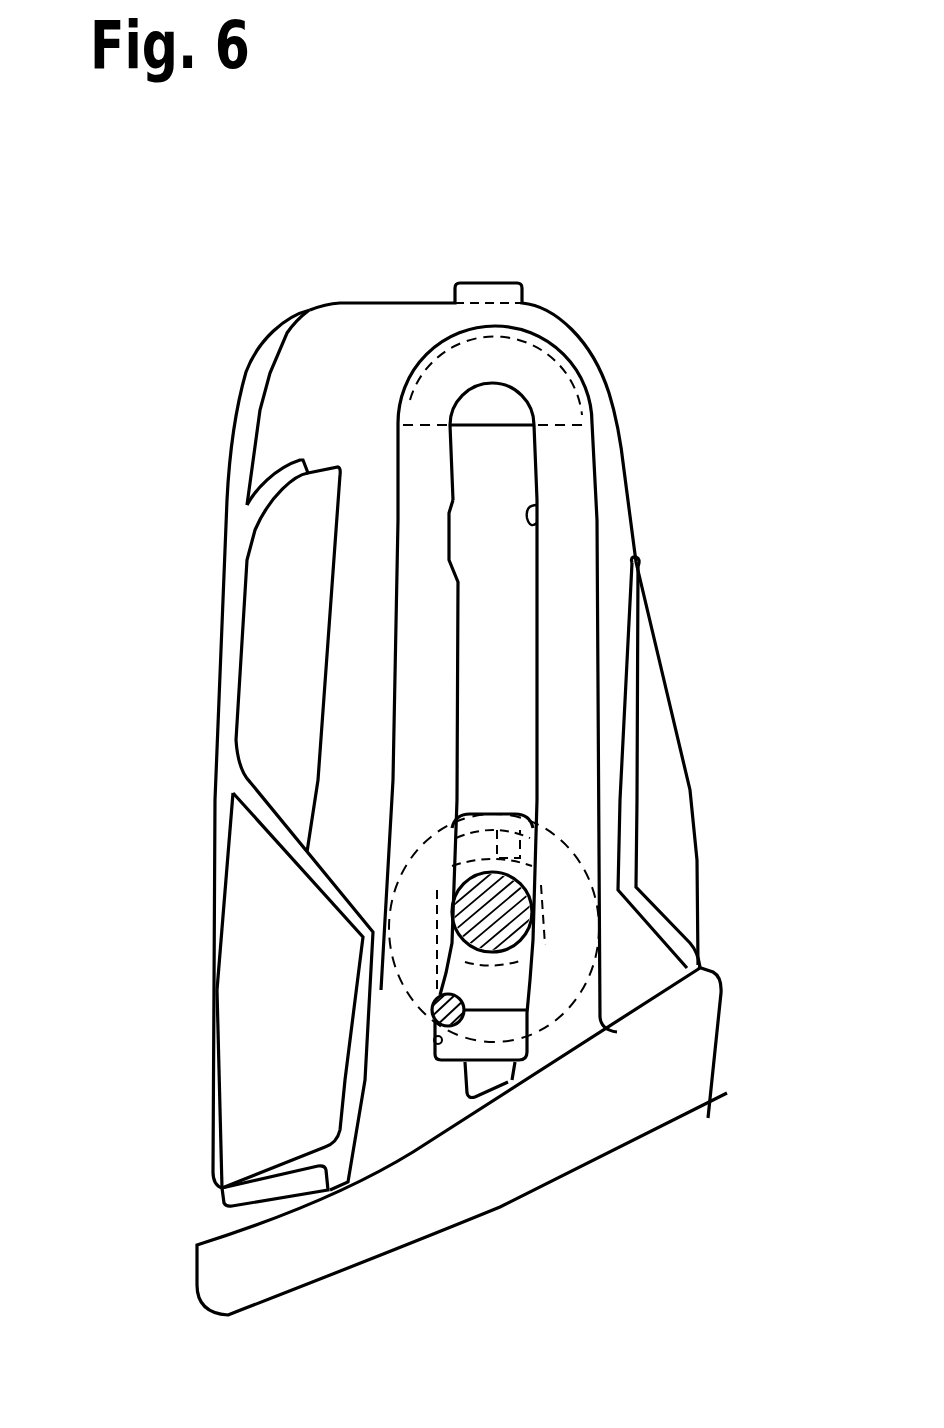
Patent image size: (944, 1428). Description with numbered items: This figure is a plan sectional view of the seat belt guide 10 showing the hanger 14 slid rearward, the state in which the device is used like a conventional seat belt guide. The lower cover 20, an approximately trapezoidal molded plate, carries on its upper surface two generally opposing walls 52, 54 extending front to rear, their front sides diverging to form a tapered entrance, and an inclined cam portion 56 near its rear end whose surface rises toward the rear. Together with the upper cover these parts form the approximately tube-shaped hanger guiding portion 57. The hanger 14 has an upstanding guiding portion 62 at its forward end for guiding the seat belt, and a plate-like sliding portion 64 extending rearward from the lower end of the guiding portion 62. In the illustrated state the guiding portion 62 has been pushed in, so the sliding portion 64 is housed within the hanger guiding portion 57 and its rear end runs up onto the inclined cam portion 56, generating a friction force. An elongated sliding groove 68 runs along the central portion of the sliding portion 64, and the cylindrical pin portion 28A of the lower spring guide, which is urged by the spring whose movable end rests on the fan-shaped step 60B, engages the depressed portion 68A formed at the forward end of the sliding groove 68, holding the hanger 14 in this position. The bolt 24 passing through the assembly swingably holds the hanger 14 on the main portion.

The seat belt guide 10 is at (114, 705).
The hanger 14 is at (496, 1222).
The lower cover 20 is at (368, 337).
The bolt 24 is at (535, 895).
The cylindrical pin portion 28A is at (432, 1001).
The wall 52 is at (360, 1010).
The wall 54 is at (632, 797).
The inclined cam portion 56 is at (512, 398).
The hanger guiding portion 57 is at (628, 958).
The step 60B is at (500, 1030).
The guiding portion 62 is at (703, 1043).
The sliding portion 64 is at (583, 550).
The sliding groove 68 is at (538, 503).
The depressed portion 68A is at (433, 1052).